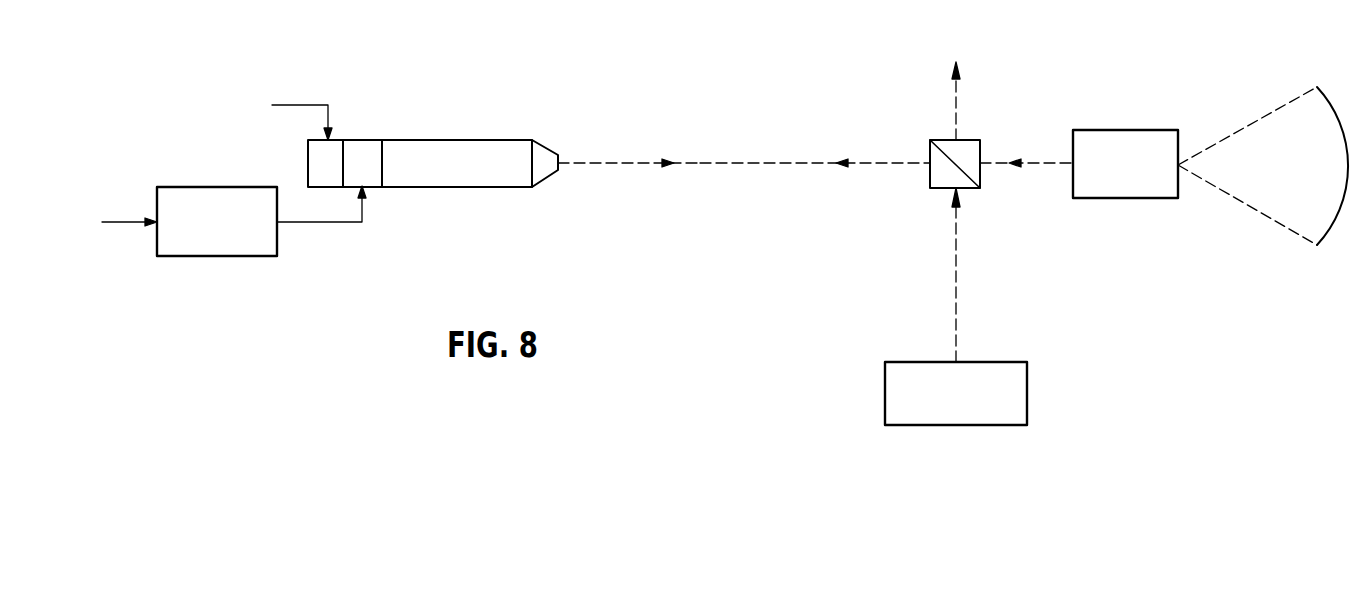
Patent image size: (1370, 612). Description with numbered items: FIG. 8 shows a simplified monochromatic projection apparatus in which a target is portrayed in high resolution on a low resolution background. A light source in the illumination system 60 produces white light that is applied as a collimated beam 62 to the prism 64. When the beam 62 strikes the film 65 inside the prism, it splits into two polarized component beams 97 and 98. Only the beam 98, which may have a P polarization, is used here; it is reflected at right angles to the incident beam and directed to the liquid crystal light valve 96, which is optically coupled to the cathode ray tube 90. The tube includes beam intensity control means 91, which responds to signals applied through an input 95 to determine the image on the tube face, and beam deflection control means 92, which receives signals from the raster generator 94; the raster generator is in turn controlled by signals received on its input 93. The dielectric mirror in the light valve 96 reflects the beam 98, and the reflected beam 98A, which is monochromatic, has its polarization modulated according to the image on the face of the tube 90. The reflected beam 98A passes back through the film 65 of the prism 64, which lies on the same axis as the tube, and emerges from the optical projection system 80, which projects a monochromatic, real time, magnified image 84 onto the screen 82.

The illumination system 60 is at (992, 368).
The collimated beam 62 is at (952, 193).
The prism 64 is at (963, 143).
The film 65 is at (975, 172).
The optical projection system 80 is at (1143, 132).
The screen 82 is at (1327, 237).
The magnified image 84 is at (1232, 132).
The cathode ray tube 90 is at (452, 142).
The beam intensity control means 91 is at (320, 158).
The beam deflection control means 92 is at (360, 148).
The input 93 is at (118, 222).
The raster generator 94 is at (187, 195).
The input 95 is at (290, 105).
The light valve 96 is at (542, 157).
The polarized component beam 97 is at (952, 68).
The polarized component beam 98 is at (845, 167).
The reflected beam 98A is at (667, 166).